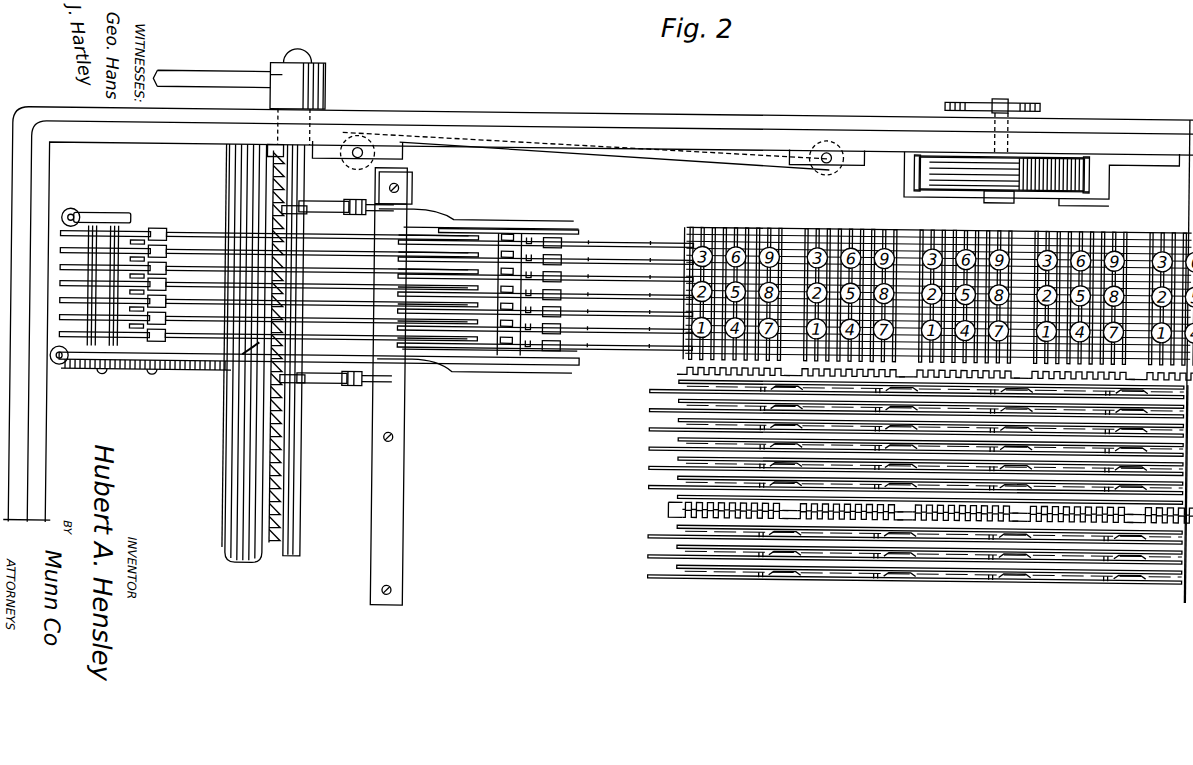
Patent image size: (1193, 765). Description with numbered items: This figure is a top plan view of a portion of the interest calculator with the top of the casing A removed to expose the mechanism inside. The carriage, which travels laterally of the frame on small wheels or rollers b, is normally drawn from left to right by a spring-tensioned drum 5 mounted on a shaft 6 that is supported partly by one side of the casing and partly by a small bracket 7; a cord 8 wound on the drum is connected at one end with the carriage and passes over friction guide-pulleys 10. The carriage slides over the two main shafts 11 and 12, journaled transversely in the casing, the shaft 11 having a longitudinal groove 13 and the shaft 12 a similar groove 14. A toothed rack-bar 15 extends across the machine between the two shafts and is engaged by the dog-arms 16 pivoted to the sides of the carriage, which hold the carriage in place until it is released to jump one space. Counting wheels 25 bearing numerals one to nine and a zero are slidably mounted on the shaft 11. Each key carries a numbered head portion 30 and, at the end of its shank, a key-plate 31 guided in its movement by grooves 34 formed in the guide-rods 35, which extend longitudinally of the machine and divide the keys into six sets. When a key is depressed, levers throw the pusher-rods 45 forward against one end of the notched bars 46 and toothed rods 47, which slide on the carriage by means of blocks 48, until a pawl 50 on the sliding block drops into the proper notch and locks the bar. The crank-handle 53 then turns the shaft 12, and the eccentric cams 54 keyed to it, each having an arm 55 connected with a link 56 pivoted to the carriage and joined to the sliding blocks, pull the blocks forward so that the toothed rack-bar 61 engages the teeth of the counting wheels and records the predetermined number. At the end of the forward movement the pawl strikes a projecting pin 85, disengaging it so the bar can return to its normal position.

The casing A is at (505, 104).
The spring-tensioned drum 5 is at (950, 180).
The shaft 6 is at (1010, 95).
The bracket 7 is at (1112, 176).
The cord 8 is at (770, 159).
The friction guide-pulley 10 is at (385, 160).
The main shaft 11 is at (230, 456).
The main shaft 12 is at (305, 505).
The groove 13 is at (247, 490).
The groove 14 is at (290, 474).
The toothed rack-bar 15 is at (293, 449).
The dog-arm 16 is at (295, 208).
The counting wheel 25 is at (233, 368).
The head portion 30 is at (748, 240).
The key-plate 31 is at (733, 224).
The groove 34 is at (693, 220).
The guide-rod 35 is at (1162, 510).
The pusher-rod 45 is at (673, 242).
The notched bar 46 is at (642, 230).
The toothed rod 47 is at (613, 243).
The sliding block 48 is at (567, 225).
The pawl 50 is at (572, 226).
The crank-handle 53 is at (270, 78).
The eccentric cam 54 is at (360, 206).
The arm 55 is at (490, 215).
The link 56 is at (560, 228).
The toothed rack-bar 61 is at (410, 238).
The projecting pin 85 is at (518, 215).
The roller b is at (81, 212).